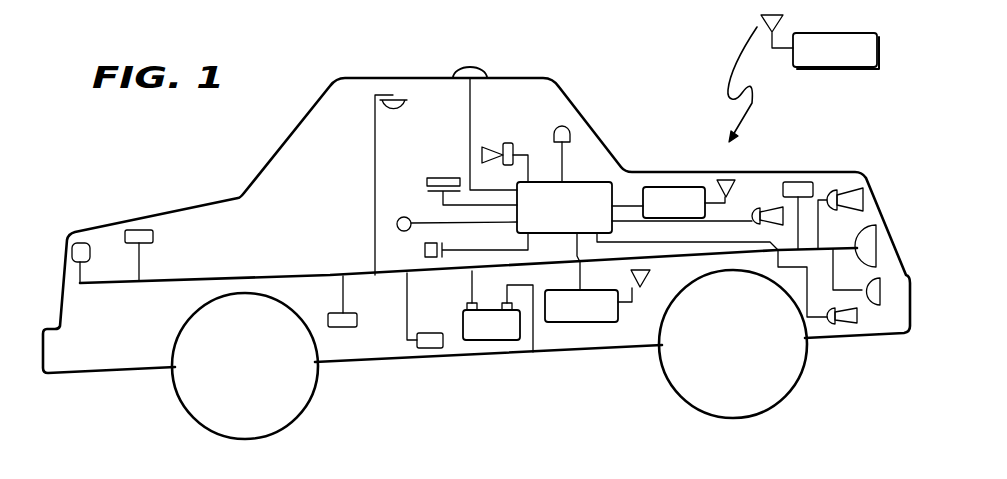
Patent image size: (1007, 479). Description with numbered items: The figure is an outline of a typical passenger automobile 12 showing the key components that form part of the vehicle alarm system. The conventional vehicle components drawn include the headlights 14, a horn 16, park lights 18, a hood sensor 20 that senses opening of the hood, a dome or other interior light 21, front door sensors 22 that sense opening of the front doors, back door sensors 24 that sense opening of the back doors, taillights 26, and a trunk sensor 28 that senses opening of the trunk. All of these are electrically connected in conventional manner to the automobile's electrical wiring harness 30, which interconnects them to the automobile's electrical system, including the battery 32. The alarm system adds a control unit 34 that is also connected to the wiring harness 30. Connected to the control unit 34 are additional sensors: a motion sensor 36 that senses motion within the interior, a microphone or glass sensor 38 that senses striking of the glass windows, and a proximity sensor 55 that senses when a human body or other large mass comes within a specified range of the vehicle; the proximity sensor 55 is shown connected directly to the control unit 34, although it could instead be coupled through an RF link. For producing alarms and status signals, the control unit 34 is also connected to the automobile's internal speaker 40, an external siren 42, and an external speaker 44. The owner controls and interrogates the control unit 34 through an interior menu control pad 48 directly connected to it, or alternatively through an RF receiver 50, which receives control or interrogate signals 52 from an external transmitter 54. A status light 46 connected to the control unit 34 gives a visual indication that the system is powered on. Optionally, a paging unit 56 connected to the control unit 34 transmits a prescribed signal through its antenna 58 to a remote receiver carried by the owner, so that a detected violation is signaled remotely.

The passenger automobile 12 is at (502, 77).
The headlights 14 is at (877, 237).
The horn 16 is at (865, 188).
The park lights 18 is at (882, 290).
The hood sensor 20 is at (802, 182).
The dome or other interior light 21 is at (421, 100).
The front door sensors 22 is at (443, 333).
The back door sensors 24 is at (358, 314).
The taillights 26 is at (91, 252).
The trunk sensor 28 is at (154, 236).
The electrical wiring harness 30 is at (323, 274).
The battery 32 is at (498, 288).
The control unit 34 is at (598, 157).
The motion sensor 36 is at (412, 188).
The microphone or glass sensor 38 is at (425, 241).
The internal speaker 40 is at (508, 143).
The external siren 42 is at (835, 326).
The external speaker 44 is at (768, 207).
The status light 46 is at (562, 125).
The control pad 48 is at (452, 153).
The RF receiver 50 is at (688, 187).
The control or interrogate signals 52 is at (780, 93).
The external transmitter 54 is at (848, 67).
The proximity sensor 55 is at (459, 71).
The paging unit 56 is at (565, 322).
The antenna 58 is at (646, 281).